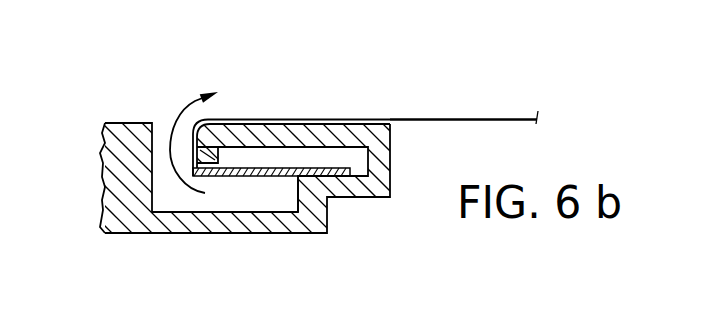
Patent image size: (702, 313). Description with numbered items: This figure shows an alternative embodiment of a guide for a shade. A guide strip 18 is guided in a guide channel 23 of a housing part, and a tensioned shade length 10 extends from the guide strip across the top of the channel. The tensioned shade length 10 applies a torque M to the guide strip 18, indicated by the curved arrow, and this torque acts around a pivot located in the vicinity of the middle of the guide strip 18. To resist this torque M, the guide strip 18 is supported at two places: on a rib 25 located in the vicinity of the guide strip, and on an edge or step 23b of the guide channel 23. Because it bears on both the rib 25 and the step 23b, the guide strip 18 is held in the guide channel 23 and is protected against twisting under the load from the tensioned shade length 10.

The tensioned shade length 10 is at (477, 115).
The guide strip 18 is at (288, 162).
The guide channel 23 is at (235, 195).
The edge or step of the guide channel 23b is at (303, 188).
The rib 25 is at (217, 153).
The torque M is at (174, 121).